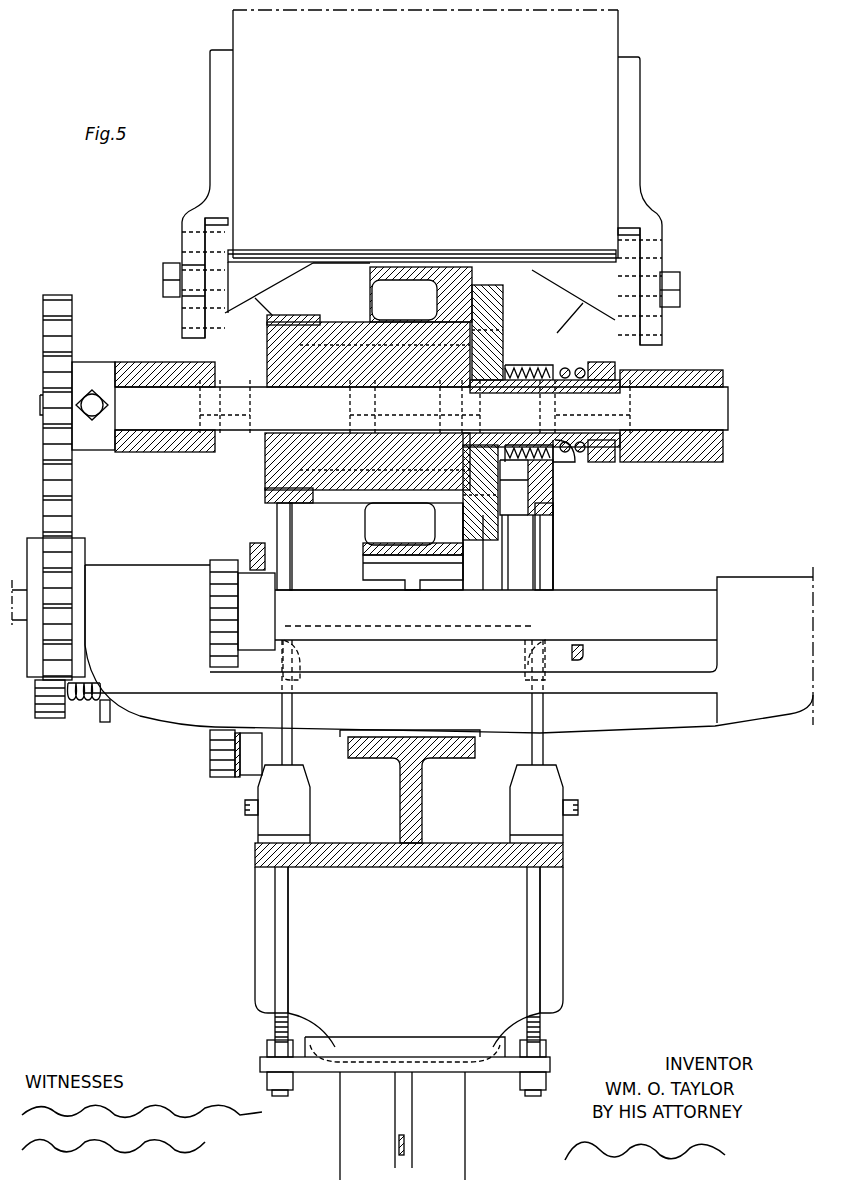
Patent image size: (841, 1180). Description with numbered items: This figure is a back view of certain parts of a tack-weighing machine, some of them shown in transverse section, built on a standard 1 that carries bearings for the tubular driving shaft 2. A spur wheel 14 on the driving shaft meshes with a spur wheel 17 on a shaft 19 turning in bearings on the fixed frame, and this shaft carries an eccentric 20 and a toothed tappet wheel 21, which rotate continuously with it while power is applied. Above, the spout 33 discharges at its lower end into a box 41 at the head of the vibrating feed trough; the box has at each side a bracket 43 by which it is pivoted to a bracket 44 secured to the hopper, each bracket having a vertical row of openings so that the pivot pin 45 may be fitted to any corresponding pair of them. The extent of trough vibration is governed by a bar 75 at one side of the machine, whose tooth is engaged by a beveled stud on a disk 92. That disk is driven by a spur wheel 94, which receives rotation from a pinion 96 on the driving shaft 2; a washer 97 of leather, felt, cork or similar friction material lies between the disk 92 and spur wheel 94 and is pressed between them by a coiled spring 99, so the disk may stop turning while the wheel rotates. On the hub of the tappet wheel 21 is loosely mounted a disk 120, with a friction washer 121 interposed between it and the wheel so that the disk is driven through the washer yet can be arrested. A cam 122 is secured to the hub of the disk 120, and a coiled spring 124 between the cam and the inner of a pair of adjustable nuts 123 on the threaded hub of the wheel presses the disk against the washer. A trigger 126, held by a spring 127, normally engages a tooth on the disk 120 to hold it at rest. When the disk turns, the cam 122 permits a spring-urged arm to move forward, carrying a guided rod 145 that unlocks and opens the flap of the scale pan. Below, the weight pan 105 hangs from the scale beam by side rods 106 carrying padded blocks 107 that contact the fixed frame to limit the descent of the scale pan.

The standard 1 is at (409, 945).
The driving shaft 2 is at (449, 618).
The spur wheel 14 is at (48, 720).
The spur wheel 17 is at (52, 297).
The shaft 19 is at (400, 412).
The eccentric 20 is at (267, 350).
The toothed wheel 21 is at (415, 257).
The spout 33 is at (425, 134).
The box 41 is at (299, 287).
The bracket 43 is at (253, 296).
The bracket 44 is at (182, 217).
The pivot pin 45 is at (163, 282).
The bar 75 is at (257, 543).
The disk 92 is at (292, 752).
The spur wheel 94 is at (210, 755).
The pinion 96 is at (224, 560).
The washer 97 is at (237, 780).
The coiled spring 99 is at (84, 703).
The weight pan 105 is at (405, 1098).
The side rods 106 is at (276, 933).
The padded blocks 107 is at (411, 804).
The disk 120 is at (503, 307).
The friction washer 121 is at (455, 306).
The cam 122 is at (556, 500).
The adjustable nuts 123 is at (605, 400).
The coiled spring 124 is at (563, 367).
The trigger 126 is at (505, 532).
The spring 127 is at (495, 560).
The guided rod 145 is at (585, 657).